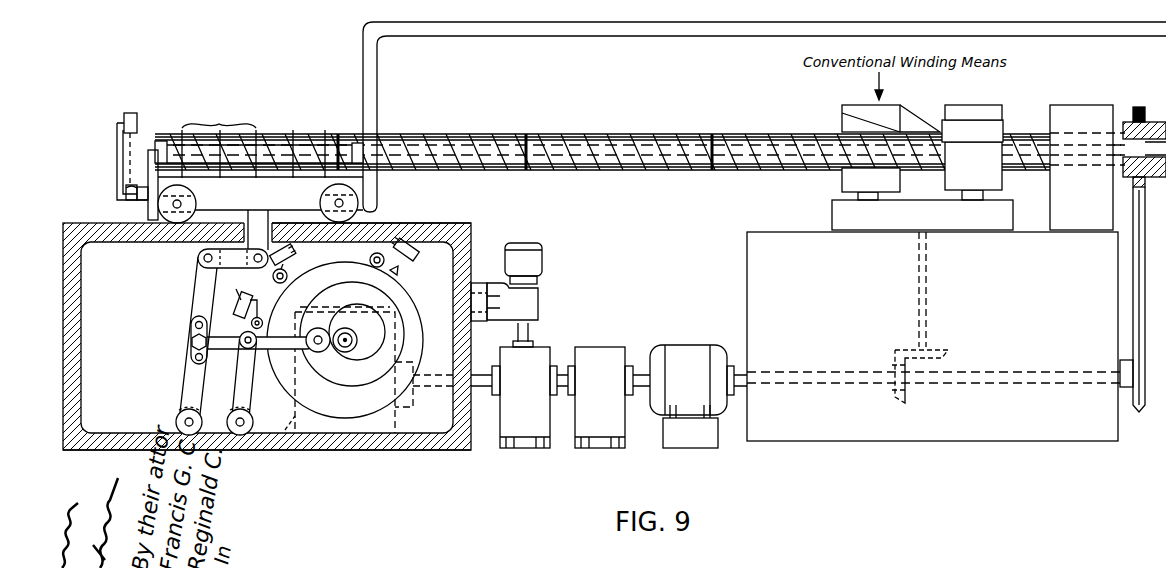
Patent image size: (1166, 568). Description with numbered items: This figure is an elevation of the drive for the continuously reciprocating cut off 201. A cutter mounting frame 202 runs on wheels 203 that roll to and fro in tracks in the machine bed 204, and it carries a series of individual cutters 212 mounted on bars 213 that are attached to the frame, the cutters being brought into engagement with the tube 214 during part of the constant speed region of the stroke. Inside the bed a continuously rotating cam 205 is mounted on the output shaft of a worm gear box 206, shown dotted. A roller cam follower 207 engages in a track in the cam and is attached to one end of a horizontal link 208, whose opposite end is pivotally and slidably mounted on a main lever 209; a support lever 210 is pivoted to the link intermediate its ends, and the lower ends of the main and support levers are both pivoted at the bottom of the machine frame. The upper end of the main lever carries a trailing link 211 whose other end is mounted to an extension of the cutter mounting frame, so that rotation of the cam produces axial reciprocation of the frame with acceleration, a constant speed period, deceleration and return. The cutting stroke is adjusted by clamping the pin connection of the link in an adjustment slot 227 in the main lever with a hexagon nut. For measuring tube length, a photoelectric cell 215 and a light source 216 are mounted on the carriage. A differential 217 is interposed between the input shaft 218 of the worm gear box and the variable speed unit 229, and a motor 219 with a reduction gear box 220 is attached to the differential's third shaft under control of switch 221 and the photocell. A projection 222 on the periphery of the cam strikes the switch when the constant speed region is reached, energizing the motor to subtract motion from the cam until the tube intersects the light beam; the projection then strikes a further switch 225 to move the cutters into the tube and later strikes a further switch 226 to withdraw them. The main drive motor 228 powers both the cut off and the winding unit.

The continuously reciprocating cut off 201 is at (268, 104).
The cutter mounting frame 202 is at (230, 201).
The wheels 203 is at (359, 199).
The machine bed 204 is at (73, 334).
The cam 205 is at (360, 357).
The worm gear box 206 is at (267, 452).
The roller cam follower 207 is at (322, 355).
The horizontal link 208 is at (227, 346).
The main lever 209 is at (192, 384).
The support lever 210 is at (243, 397).
The trailing link 211 is at (236, 260).
The individual cutters 212 is at (253, 136).
The bars 213 is at (302, 156).
The tube 214 is at (493, 146).
The photoelectric cell 215 is at (125, 196).
The light source 216 is at (124, 117).
The differential 217 is at (528, 428).
The input shaft 218 is at (436, 388).
The motor 219 is at (533, 258).
The reduction gear box 220 is at (530, 303).
The switch 221 is at (440, 222).
The projection 222 is at (403, 274).
The further switch 225 is at (298, 253).
The further switch 226 is at (245, 298).
The adjustment slot 227 is at (196, 325).
The main drive motor 228 is at (687, 357).
The variable speed unit 229 is at (607, 423).